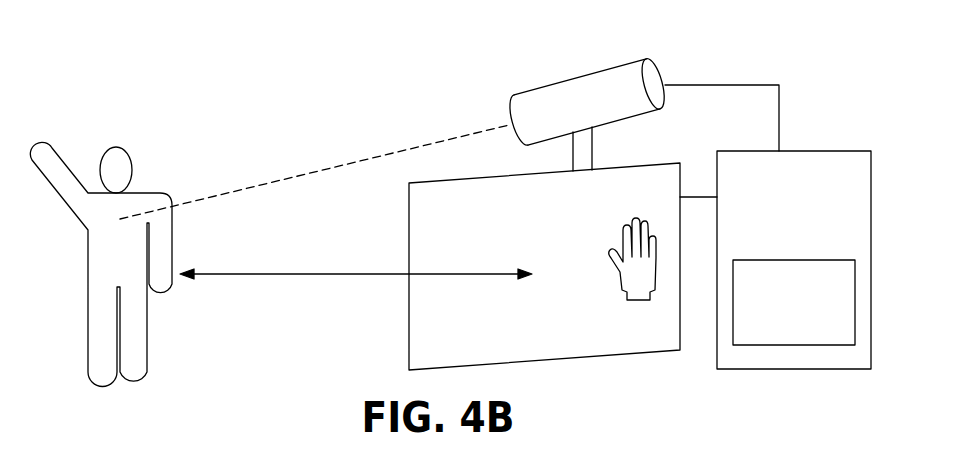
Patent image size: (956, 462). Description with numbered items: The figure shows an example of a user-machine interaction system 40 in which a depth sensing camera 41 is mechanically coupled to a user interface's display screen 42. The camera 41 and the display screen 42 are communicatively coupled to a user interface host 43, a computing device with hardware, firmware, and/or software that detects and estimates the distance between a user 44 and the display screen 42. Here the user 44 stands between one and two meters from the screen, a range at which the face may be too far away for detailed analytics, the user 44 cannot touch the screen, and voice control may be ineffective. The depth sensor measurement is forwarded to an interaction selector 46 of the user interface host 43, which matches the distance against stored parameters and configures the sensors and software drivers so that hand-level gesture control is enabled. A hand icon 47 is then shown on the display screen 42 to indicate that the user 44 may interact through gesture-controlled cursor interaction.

The user-machine interaction system 40 is at (147, 40).
The depth sensing camera 41 is at (545, 83).
The display screen 42 is at (600, 356).
The user interface host 43 is at (810, 151).
The user 44 is at (144, 189).
The interaction selector 46 is at (788, 260).
The hand icon 47 is at (637, 303).